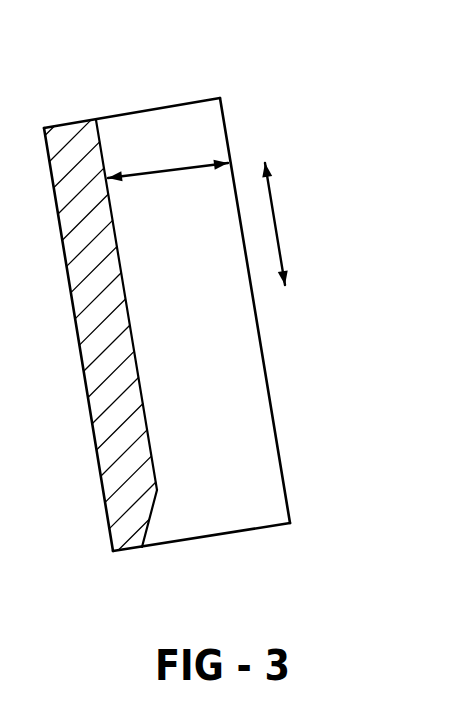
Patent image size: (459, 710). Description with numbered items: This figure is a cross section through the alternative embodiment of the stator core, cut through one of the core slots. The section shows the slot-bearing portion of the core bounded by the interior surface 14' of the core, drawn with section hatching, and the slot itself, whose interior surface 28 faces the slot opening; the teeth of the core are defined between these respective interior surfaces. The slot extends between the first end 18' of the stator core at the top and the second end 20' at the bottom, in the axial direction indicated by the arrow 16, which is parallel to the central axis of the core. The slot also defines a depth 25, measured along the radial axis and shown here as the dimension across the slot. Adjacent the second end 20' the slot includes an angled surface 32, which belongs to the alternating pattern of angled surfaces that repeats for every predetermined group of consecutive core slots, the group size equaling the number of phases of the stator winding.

The interior surface 14' is at (88, 335).
The arrow 16 is at (278, 227).
The first end 18' is at (132, 73).
The second end 20' is at (231, 573).
The depth 25 is at (195, 165).
The interior surface 28 is at (198, 308).
The angled surface 32 is at (150, 517).